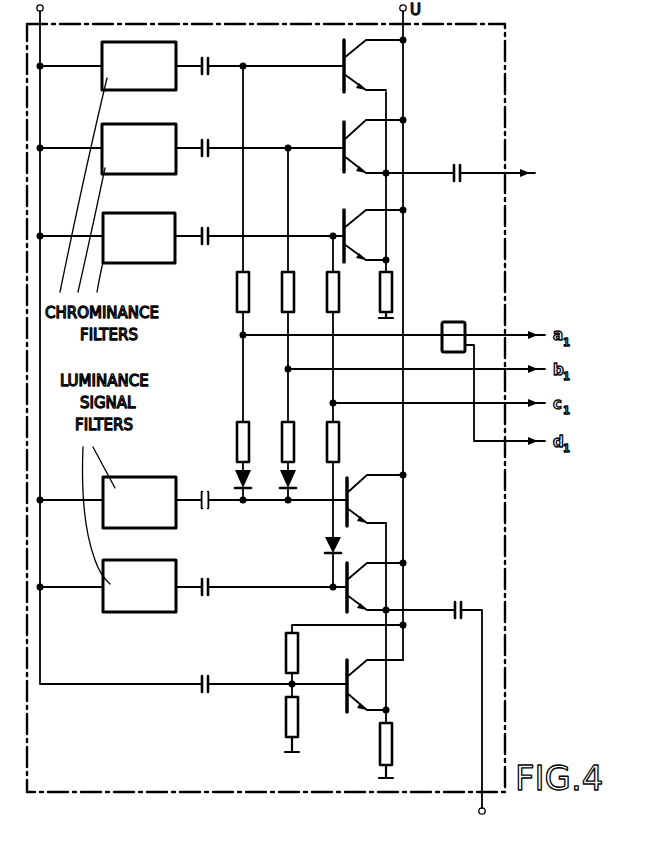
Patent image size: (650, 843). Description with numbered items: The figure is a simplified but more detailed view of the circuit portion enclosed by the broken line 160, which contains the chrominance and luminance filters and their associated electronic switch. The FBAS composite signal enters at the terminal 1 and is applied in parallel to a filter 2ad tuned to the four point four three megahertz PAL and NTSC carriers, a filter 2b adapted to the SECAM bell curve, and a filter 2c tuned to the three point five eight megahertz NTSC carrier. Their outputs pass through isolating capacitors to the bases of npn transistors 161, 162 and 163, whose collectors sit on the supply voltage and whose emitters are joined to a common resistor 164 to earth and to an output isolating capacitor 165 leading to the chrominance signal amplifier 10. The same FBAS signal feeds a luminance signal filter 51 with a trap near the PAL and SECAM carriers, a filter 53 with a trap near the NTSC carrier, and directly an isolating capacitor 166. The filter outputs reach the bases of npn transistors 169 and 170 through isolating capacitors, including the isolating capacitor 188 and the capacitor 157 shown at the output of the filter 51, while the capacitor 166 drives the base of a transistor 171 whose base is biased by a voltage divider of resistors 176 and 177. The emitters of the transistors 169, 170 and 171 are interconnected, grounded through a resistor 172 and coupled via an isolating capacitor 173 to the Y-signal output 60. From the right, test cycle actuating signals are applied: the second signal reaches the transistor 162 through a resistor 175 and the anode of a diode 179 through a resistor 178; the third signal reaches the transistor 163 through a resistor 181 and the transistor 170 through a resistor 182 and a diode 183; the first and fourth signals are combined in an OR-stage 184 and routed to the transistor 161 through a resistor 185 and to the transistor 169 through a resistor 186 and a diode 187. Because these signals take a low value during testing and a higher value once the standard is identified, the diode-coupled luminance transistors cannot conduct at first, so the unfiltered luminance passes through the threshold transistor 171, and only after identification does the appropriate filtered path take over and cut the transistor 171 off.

The terminal 1 is at (36, 8).
The filter 2ad is at (150, 82).
The filter 2b is at (145, 166).
The filter 2c is at (143, 262).
The chrominance signal amplifier 10 is at (530, 174).
The luminance signal filter 51 is at (140, 483).
The filter 53 is at (135, 610).
The output 60 is at (486, 808).
The coupling capacitor 157 is at (205, 490).
The broken line 160 is at (128, 792).
The npn transistor 161 is at (344, 78).
The npn transistor 162 is at (344, 158).
The npn transistor 163 is at (344, 228).
The resistor 164 is at (380, 300).
The output isolating capacitor 165 is at (452, 167).
The isolating capacitor 166 is at (204, 678).
The npn transistor 169 is at (350, 478).
The npn transistor 170 is at (345, 604).
The npn transistor 171 is at (345, 693).
The resistor 172 is at (397, 745).
The isolating capacitor 173 is at (455, 603).
The resistor 175 is at (281, 300).
The resistor 176 is at (286, 652).
The resistor 177 is at (286, 716).
The resistor 178 is at (282, 433).
The diode 179 is at (297, 482).
The resistor 181 is at (326, 300).
The resistor 182 is at (327, 433).
The diode 183 is at (326, 545).
The OR-stage 184 is at (425, 287).
The resistor 185 is at (236, 300).
The resistor 186 is at (237, 433).
The diode 187 is at (237, 477).
The isolating capacitor 188 is at (216, 570).